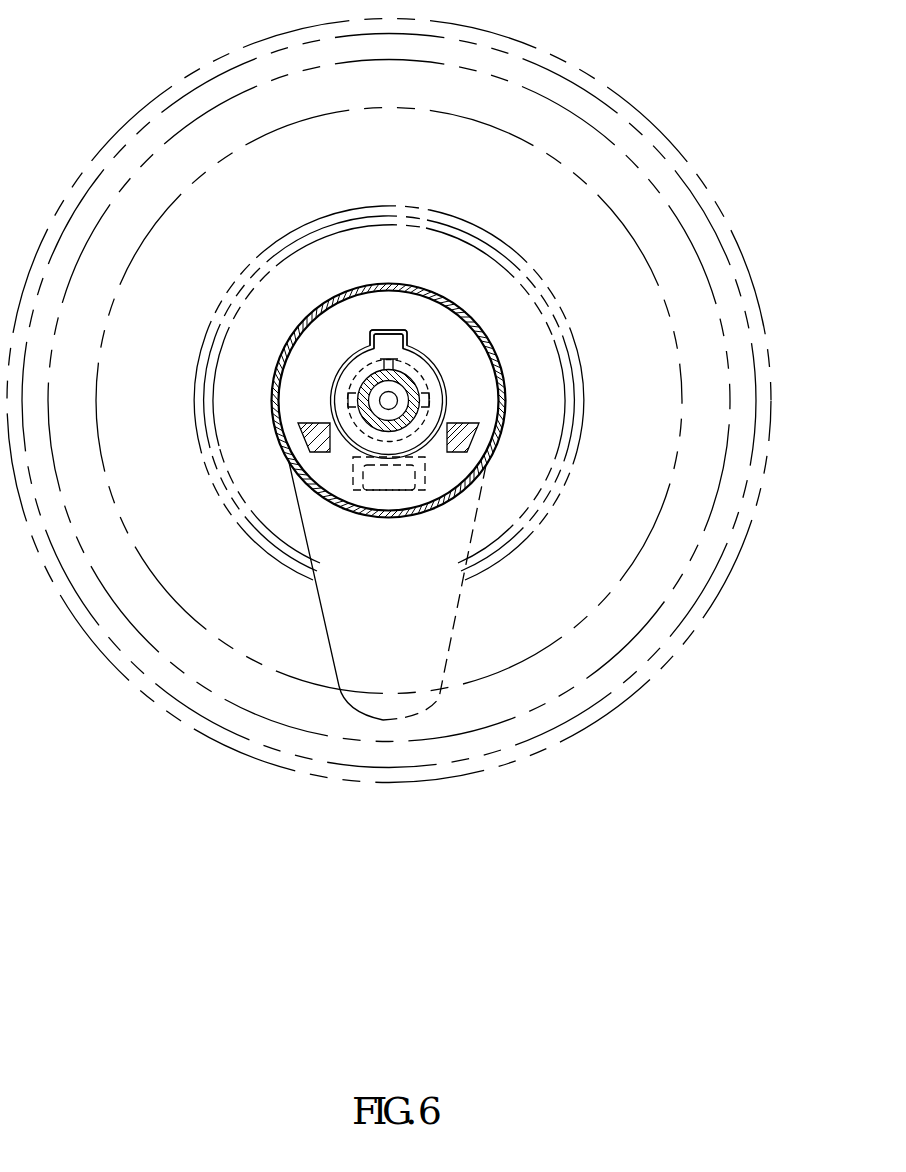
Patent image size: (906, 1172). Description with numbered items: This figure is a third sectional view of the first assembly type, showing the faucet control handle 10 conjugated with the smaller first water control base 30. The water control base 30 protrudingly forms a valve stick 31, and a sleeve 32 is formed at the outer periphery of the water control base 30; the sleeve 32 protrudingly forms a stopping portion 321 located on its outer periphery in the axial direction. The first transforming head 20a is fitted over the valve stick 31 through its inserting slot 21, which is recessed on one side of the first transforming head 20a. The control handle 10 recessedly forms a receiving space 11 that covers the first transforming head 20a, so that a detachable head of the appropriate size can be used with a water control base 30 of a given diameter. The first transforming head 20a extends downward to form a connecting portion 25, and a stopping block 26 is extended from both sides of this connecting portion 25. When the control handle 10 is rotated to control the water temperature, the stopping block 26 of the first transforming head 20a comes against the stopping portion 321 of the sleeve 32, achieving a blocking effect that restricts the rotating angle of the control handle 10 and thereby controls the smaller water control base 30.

The first water control base 30 is at (325, 228).
The control handle 10 is at (333, 298).
The receiving space 11 is at (320, 363).
The stopping portion 321 is at (410, 332).
The sleeve 32 is at (485, 358).
The inserting slot 21 is at (512, 401).
The valve stick 31 is at (420, 390).
The stopping block 26 is at (298, 428).
The connecting portion 25 is at (350, 472).
The first transforming head 20a is at (448, 465).